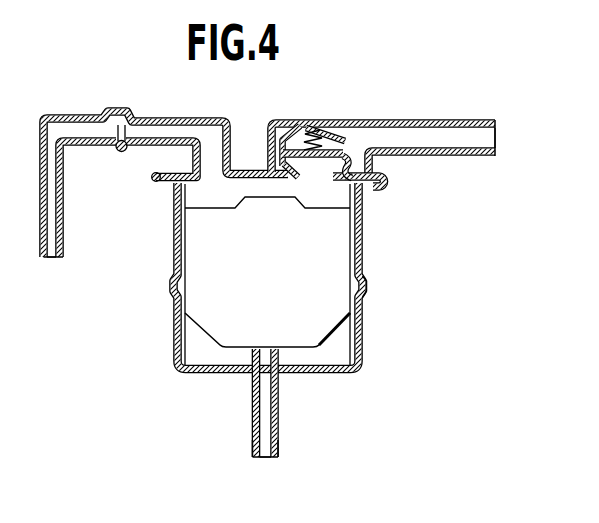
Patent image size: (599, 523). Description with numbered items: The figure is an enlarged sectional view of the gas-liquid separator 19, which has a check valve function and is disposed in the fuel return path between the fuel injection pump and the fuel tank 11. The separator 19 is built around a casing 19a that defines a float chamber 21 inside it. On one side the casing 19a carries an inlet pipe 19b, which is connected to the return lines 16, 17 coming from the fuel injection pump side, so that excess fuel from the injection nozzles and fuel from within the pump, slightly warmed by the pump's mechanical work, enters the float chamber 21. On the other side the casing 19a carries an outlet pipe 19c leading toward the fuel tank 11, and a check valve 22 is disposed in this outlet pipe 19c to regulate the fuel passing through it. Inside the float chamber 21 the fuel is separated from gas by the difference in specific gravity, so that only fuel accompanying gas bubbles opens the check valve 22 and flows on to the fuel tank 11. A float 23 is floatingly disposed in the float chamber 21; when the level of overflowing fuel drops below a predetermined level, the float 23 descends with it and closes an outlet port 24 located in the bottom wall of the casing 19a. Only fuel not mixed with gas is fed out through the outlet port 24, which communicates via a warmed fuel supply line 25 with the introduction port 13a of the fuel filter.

The fuel tank 11 is at (502, 140).
The introduction port 13a is at (265, 462).
The return line 16 is at (52, 230).
The return line 17 is at (52, 273).
The gas-liquid separator 19 is at (167, 302).
The casing 19a is at (367, 295).
The inlet pipe 19b is at (137, 148).
The outlet pipe 19c is at (414, 156).
The float chamber 21 is at (338, 347).
The check valve 22 is at (338, 128).
The float 23 is at (330, 257).
The outlet port 24 is at (262, 362).
The warmed fuel supply line 25 is at (280, 440).